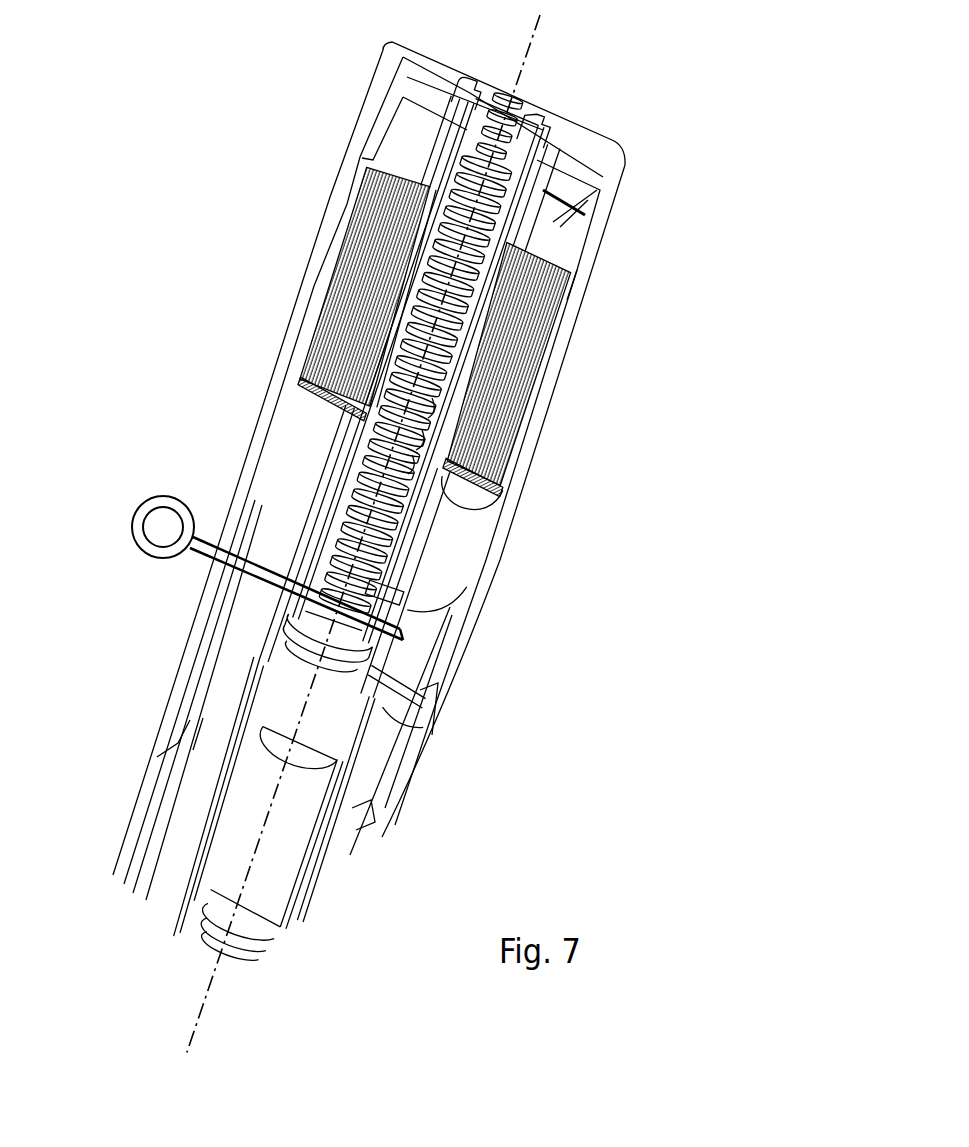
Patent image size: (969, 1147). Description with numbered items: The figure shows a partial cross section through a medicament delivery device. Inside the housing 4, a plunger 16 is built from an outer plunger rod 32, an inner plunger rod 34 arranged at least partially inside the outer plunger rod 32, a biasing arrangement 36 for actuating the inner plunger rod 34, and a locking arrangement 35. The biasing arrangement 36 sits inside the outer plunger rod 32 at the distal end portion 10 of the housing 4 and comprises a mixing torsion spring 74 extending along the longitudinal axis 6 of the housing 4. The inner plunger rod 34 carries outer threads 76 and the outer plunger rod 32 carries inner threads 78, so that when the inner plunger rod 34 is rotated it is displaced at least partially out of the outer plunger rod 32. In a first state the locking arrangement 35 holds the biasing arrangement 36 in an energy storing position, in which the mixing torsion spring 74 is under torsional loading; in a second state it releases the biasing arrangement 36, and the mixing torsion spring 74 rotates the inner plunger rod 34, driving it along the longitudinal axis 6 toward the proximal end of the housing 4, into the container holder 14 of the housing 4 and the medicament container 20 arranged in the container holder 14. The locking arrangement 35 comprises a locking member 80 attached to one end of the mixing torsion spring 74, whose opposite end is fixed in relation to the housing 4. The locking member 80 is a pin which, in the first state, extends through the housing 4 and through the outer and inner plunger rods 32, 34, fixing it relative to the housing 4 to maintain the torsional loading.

The housing 4 is at (336, 214).
The longitudinal axis 6 is at (531, 41).
The distal end portion 10 is at (308, 91).
The container holder 14 is at (326, 883).
The plunger 16 is at (346, 626).
The medicament container 20 is at (311, 854).
The outer plunger rod 32 is at (373, 467).
The inner plunger rod 34 is at (378, 557).
The locking arrangement 35 is at (121, 486).
The biasing arrangement 36 is at (316, 486).
The mixing torsion spring 74 is at (384, 500).
The outer threads 76 is at (410, 460).
The inner threads 78 is at (345, 636).
The locking member 80 is at (132, 527).